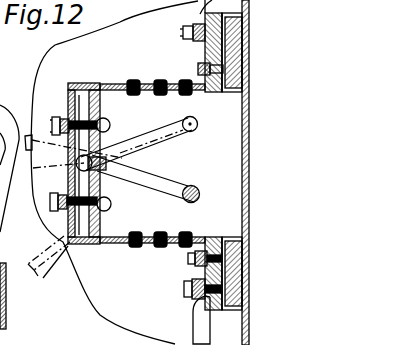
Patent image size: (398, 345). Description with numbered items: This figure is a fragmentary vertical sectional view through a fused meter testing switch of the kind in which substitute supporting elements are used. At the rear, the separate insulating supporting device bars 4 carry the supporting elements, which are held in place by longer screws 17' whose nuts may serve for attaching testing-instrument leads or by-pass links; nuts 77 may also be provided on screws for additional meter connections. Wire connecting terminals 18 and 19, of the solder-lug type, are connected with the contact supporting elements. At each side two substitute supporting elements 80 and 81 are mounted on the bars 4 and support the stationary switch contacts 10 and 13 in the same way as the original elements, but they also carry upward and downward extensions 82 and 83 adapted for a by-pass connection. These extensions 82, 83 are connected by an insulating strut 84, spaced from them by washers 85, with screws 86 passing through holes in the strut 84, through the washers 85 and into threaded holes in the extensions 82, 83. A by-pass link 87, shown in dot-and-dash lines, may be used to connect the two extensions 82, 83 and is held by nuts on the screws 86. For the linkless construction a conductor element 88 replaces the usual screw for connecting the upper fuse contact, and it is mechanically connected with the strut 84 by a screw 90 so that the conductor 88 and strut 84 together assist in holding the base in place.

The supporting device bars 4 is at (220, 92).
The switch contact 10 is at (156, 237).
The switch contact 13 is at (149, 90).
The longer screws 17' is at (184, 291).
The wire connecting terminal 18 is at (198, 328).
The wire connecting terminal 19 is at (200, 14).
The nuts 77 is at (188, 261).
The substitute supporting element 80 is at (115, 245).
The substitute supporting element 81 is at (113, 83).
The upward extension 82 is at (70, 228).
The downward extension 83 is at (68, 98).
The insulating strut 84 is at (98, 94).
The washers 85 is at (66, 117).
The screws 86 is at (110, 125).
The by-pass link 87 is at (62, 181).
The conductor element 88 is at (77, 160).
The screw 90 is at (118, 173).